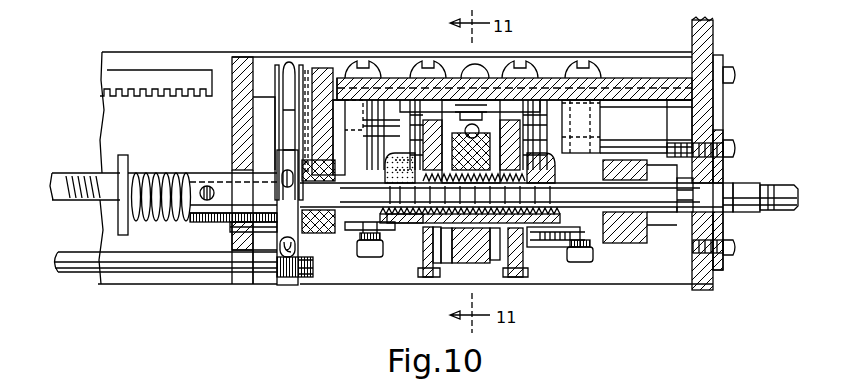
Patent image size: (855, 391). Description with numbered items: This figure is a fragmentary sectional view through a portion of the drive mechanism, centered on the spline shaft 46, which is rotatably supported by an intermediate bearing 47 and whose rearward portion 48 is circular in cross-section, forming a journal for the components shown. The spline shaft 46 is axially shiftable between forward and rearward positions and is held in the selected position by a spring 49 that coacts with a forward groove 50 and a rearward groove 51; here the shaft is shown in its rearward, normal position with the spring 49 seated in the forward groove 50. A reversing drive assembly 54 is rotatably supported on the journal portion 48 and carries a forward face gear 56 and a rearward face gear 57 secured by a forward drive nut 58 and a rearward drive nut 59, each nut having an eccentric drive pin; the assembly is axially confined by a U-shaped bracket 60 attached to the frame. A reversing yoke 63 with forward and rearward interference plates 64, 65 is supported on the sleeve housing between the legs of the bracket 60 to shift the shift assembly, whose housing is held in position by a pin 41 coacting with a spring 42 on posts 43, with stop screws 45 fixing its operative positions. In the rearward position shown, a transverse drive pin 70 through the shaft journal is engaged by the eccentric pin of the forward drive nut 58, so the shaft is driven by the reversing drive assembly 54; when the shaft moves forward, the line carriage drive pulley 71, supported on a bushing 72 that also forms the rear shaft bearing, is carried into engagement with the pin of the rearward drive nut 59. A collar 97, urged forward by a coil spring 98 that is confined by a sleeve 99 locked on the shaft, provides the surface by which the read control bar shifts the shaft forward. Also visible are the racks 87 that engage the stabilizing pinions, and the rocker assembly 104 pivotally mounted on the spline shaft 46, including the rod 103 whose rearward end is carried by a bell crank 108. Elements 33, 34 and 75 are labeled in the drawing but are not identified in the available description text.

The cover plate 33 is at (407, 113).
The plate 34 is at (291, 75).
The pin 41 is at (500, 258).
The spring 42 is at (373, 237).
The posts 43 is at (357, 222).
The stop screws 45 is at (428, 113).
The spline shaft 46 is at (85, 176).
The intermediate bearing 47 is at (337, 173).
The rearward portion 48 is at (685, 217).
The spring 49 is at (733, 173).
The forward annular groove 50 is at (740, 202).
The rearward annular groove 51 is at (760, 193).
The reversing drive assembly 54 is at (423, 276).
The forward face gear 56 is at (423, 260).
The rearward face gear 57 is at (517, 268).
The forward drive nut 58 is at (413, 217).
The rearward drive nut 59 is at (530, 240).
The U-shaped bracket 60 is at (517, 110).
The reversing yoke 63 is at (473, 258).
The forward interference plate 64 is at (463, 253).
The rearward interference plate 65 is at (493, 257).
The transverse drive pin 70 is at (346, 195).
The line carriage drive pulley 71 is at (630, 238).
The bushing 72 is at (733, 231).
The bushing 75 is at (660, 223).
The racks 87 is at (172, 97).
The collar 97 is at (127, 158).
The coil spring 98 is at (181, 171).
The sleeve 99 is at (217, 172).
The rod 103 is at (152, 268).
The rocker assembly 104 is at (297, 285).
The bell crank 108 is at (276, 286).